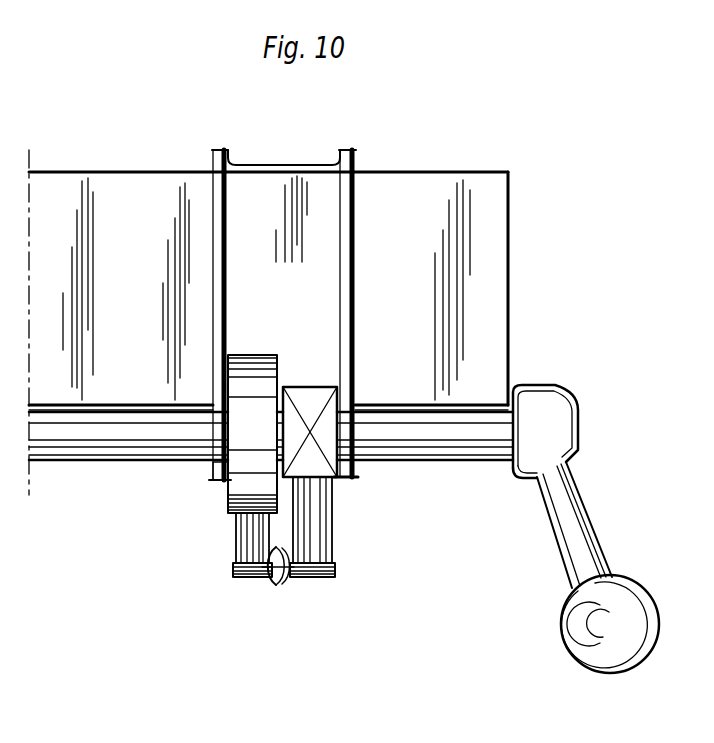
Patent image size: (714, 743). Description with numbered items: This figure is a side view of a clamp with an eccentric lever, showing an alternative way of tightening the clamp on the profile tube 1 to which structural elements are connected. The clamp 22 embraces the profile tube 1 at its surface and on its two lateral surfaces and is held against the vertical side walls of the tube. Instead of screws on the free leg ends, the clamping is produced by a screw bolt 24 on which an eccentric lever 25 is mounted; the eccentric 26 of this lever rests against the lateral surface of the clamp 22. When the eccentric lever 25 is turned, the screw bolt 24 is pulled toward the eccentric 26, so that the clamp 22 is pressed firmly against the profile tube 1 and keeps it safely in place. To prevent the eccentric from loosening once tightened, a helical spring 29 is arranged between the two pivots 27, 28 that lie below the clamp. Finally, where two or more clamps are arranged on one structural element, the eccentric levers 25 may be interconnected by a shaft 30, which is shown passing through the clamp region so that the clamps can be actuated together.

The profile tube 1 is at (132, 304).
The clamp 22 is at (285, 303).
The screw bolt 24 is at (330, 453).
The eccentric lever 25 is at (572, 506).
The eccentric 26 is at (239, 483).
The pivot 27 is at (243, 553).
The pivot 28 is at (322, 541).
The helical spring 29 is at (279, 584).
The shaft 30 is at (113, 448).